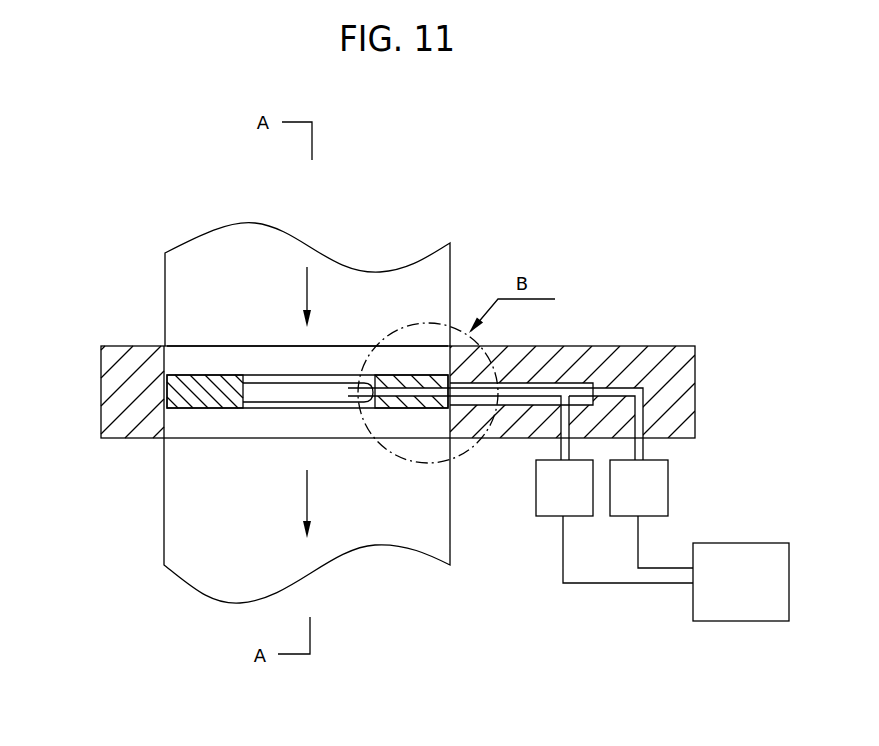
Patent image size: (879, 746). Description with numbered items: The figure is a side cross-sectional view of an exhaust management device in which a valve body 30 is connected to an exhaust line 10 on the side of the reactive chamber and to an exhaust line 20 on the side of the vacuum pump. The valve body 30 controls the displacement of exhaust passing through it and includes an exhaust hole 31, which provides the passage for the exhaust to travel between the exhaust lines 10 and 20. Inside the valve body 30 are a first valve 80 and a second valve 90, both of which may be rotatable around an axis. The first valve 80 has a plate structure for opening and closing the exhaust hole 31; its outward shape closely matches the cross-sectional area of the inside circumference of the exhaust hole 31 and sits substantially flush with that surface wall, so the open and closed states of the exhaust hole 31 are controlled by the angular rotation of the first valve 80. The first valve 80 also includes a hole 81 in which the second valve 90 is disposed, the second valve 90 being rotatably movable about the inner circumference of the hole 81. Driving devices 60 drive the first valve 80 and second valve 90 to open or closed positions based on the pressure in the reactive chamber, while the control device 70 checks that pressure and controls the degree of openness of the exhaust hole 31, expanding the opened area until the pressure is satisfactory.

The exhaust line 10 is at (236, 255).
The exhaust line 20 is at (435, 525).
The valve body 30 is at (112, 390).
The exhaust hole 31 is at (214, 358).
The driving device 60 is at (555, 487).
The control device 70 is at (735, 607).
The first valve 80 is at (215, 408).
The hole 81 is at (287, 408).
The second valve 90 is at (335, 393).